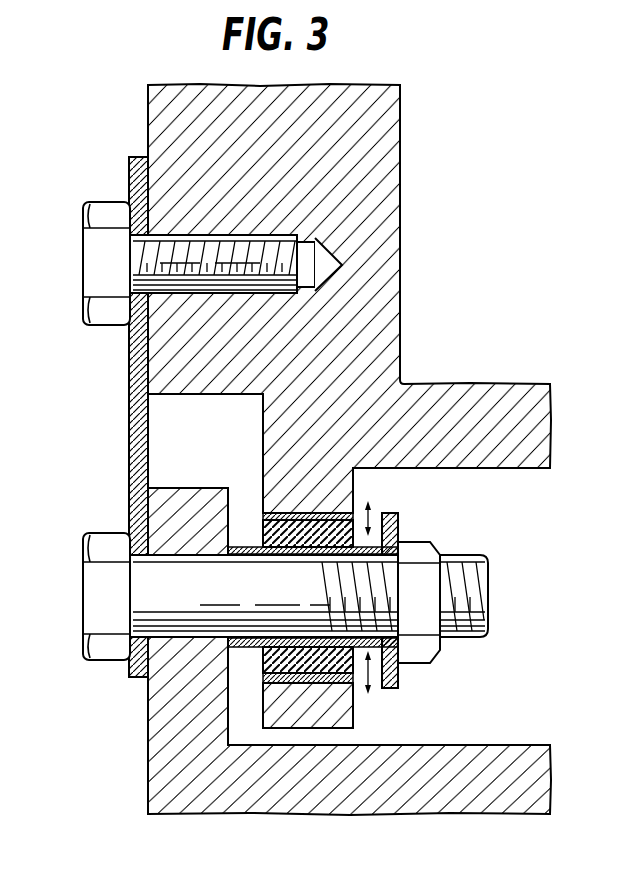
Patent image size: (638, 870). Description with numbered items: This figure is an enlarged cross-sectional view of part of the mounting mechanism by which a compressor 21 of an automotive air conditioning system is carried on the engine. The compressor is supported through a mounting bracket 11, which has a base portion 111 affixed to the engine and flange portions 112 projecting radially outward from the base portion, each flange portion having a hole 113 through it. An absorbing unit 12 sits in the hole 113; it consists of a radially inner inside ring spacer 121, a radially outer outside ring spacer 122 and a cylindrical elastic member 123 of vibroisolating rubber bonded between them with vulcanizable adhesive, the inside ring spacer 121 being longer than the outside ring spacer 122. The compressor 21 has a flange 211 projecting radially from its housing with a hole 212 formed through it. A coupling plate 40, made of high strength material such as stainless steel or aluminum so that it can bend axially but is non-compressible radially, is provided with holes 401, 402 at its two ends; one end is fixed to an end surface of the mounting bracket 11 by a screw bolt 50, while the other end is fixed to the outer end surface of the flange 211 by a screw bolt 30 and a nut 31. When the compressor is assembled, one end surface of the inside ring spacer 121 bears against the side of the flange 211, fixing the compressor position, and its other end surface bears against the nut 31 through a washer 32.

The mounting bracket 11 is at (365, 406).
The base portion 111 is at (478, 450).
The flange portion 112 is at (340, 481).
The hole 113 is at (353, 526).
The absorbing unit 12 is at (282, 552).
The inside ring spacer 121 is at (173, 707).
The outside ring spacer 122 is at (297, 513).
The cylindrical elastic member 123 is at (262, 537).
The compressor 21 is at (304, 651).
The flange 211 is at (153, 688).
The hole 212 is at (150, 725).
The screw bolt 30 is at (100, 611).
The nut 31 is at (430, 590).
The washer 32 is at (392, 688).
The coupling plate 40 is at (100, 417).
The hole 401 is at (132, 203).
The hole 402 is at (128, 665).
The screw bolt 50 is at (93, 258).